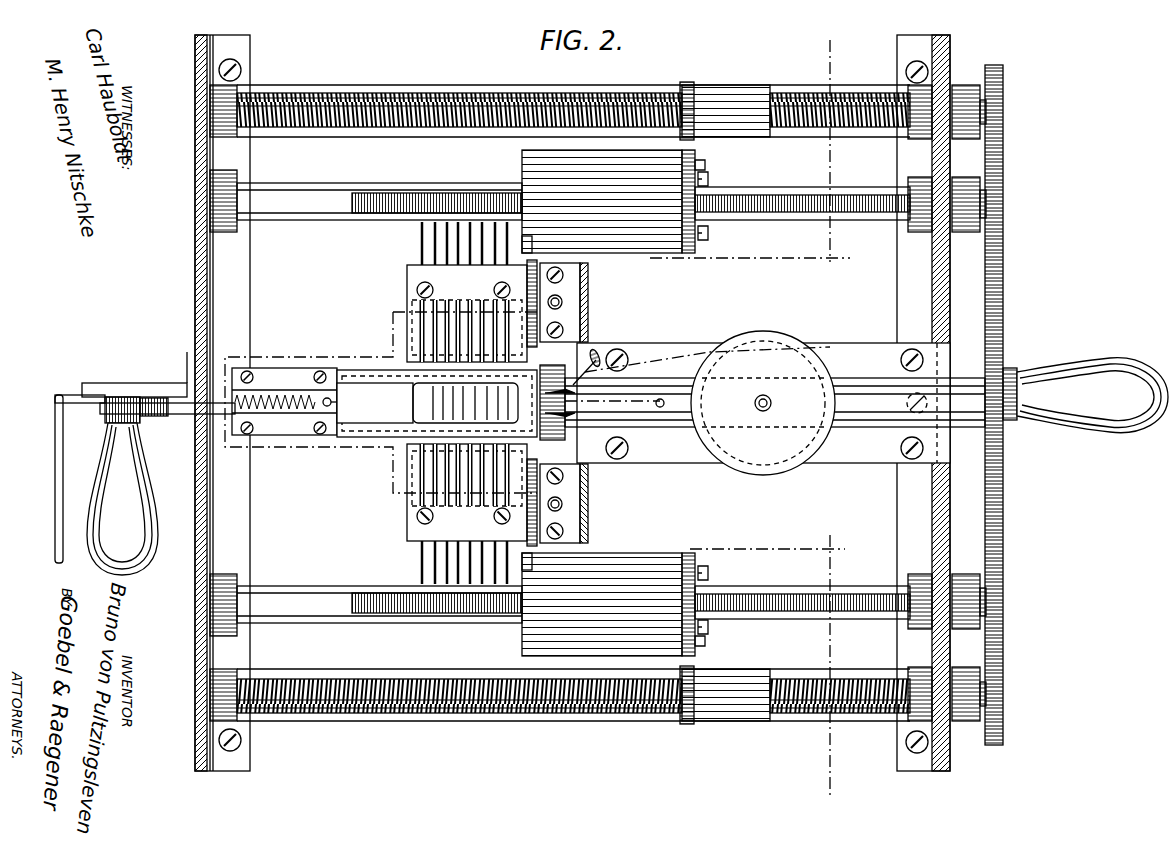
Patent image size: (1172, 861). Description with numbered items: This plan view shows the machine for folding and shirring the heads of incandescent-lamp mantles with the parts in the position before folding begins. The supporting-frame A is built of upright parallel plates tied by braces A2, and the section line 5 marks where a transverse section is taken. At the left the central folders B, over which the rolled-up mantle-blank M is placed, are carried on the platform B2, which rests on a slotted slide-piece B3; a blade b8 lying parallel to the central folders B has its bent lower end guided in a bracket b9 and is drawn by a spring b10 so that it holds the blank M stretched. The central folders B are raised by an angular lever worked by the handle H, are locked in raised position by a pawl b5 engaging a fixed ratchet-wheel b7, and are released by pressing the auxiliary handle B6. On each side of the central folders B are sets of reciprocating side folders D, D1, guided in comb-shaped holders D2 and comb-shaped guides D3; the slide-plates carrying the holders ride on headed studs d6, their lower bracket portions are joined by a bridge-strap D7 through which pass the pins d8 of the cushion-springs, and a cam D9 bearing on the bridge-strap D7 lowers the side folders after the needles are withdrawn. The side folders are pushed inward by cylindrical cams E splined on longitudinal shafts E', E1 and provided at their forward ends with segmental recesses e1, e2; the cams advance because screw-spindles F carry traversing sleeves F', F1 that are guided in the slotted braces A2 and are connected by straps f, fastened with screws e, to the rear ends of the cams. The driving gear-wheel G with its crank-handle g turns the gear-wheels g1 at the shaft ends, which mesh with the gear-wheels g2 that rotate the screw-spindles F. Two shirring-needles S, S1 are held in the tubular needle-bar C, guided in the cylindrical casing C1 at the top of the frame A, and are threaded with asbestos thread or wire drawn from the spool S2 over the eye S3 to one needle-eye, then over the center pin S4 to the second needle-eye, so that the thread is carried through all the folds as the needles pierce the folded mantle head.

The supporting-frame A is at (195, 281).
The braces A2 is at (400, 134).
The screw-spindle F is at (571, 100).
The traversing sleeve F' is at (571, 712).
The screw nut F1 is at (728, 80).
The cylindrical cam E is at (608, 201).
The longitudinal shaft E' is at (608, 593).
The cylinder rod E1 is at (571, 401).
The screw e is at (708, 179).
The strap f is at (700, 168).
The stop e1 is at (519, 567).
The segmental recess e2 is at (520, 239).
The crank-handle g is at (1085, 395).
The gear-wheel g1 is at (988, 204).
The pinion g2 is at (988, 112).
The driving gear-wheel G is at (1004, 405).
The side folder D is at (420, 565).
The side folder D1 is at (421, 238).
The comb-shaped holder D2 is at (572, 322).
The comb-shaped guide D3 is at (407, 290).
The bridge-strap D7 is at (572, 487).
The cam D9 is at (535, 456).
The headed stud d6 is at (547, 292).
The pin d8 is at (562, 302).
The needle-bar C is at (775, 402).
The cylindrical casing C1 is at (880, 418).
The shirring-needle S is at (557, 402).
The slide link S1 is at (690, 338).
The spool S2 is at (763, 403).
The eye S3 is at (596, 360).
The center pin S4 is at (660, 407).
The central folder B is at (413, 404).
The platform B2 is at (380, 438).
The slide-piece B3 is at (166, 416).
The auxiliary handle B6 is at (56, 458).
The mantle-blank M is at (357, 384).
The pawl b5 is at (170, 383).
The ratchet-wheel b7 is at (170, 416).
The blade b8 is at (336, 438).
The bracket b9 is at (292, 432).
The spring b10 is at (272, 398).
The handle H is at (145, 515).
The section line 5 is at (750, 416).